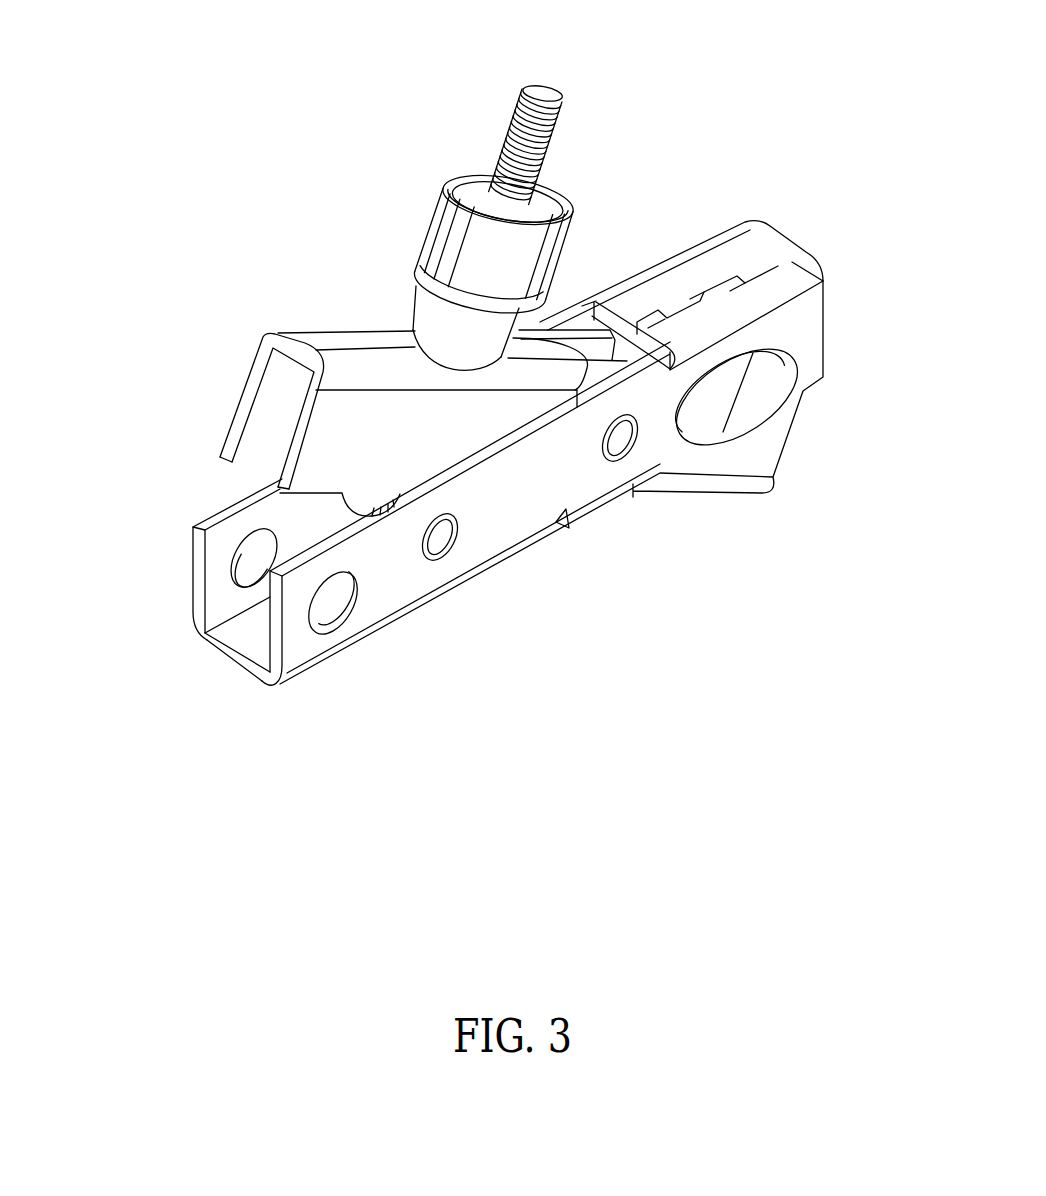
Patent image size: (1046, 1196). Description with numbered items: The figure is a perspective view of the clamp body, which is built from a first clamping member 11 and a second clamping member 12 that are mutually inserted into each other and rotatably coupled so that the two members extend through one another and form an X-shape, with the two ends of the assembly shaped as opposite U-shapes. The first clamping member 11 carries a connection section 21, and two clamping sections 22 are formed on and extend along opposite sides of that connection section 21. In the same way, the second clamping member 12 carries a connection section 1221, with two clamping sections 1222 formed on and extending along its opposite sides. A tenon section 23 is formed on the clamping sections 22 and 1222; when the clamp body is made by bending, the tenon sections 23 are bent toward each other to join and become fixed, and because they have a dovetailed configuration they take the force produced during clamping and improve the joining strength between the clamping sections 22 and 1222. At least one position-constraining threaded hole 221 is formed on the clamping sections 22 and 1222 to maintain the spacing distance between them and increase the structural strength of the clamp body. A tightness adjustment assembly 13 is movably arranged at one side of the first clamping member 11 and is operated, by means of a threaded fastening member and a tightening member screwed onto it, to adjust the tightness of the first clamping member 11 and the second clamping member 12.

The first clamping member 11 is at (268, 335).
The second clamping member 12 is at (263, 680).
The connection section 1221 is at (243, 640).
The clamping sections 1222 is at (193, 562).
The tightness adjustment assembly 13 is at (567, 166).
The connection section 21 is at (290, 357).
The clamping sections 22 is at (235, 407).
The position-constraining threaded hole 221 is at (350, 608).
The tenon section 23 is at (708, 278).